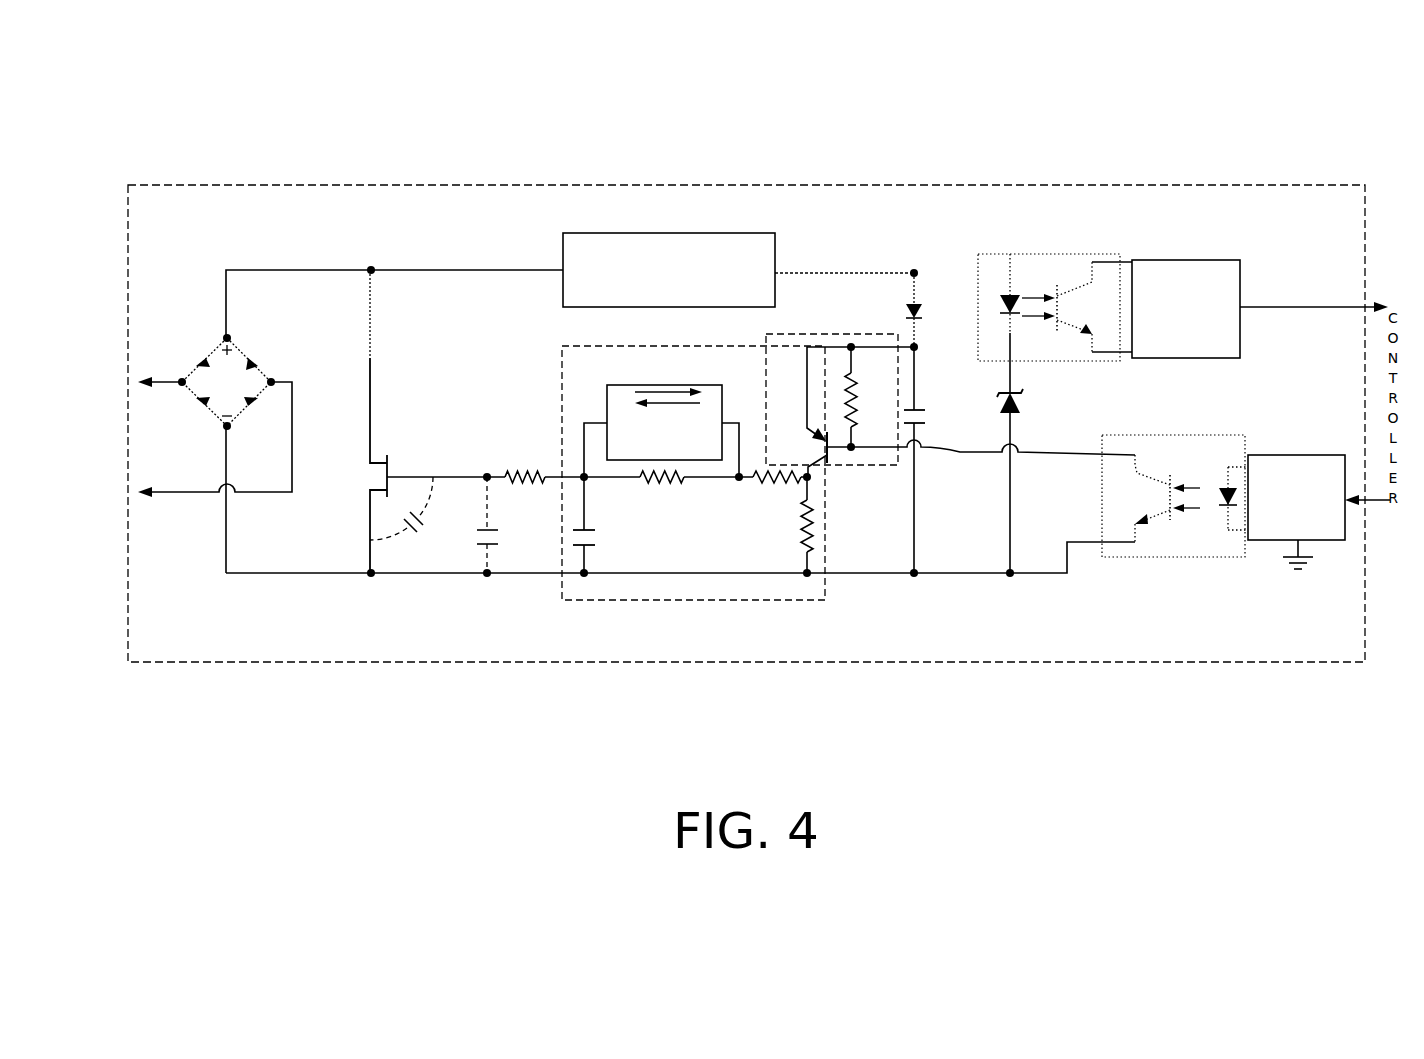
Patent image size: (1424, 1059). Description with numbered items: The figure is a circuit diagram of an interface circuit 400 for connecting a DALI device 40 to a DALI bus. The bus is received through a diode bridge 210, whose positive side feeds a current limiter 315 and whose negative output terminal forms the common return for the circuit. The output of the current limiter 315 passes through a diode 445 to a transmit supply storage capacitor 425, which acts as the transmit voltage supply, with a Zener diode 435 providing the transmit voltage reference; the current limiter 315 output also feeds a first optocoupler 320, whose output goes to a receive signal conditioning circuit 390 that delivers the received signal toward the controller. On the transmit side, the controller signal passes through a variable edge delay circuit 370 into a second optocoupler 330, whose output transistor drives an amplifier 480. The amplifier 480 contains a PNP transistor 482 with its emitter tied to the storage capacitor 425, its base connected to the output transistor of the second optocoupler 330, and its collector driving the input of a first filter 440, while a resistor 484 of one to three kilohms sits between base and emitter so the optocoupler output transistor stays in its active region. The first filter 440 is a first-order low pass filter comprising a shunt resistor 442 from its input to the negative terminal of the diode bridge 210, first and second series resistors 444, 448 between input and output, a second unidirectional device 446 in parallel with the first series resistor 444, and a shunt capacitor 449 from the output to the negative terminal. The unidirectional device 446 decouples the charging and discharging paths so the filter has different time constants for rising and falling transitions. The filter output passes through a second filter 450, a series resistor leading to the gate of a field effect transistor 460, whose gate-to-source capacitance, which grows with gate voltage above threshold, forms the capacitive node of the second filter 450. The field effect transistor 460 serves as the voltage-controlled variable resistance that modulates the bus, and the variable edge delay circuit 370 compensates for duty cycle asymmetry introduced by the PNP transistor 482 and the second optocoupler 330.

The DALI device 40 is at (1348, 51).
The interface circuit 400 is at (746, 406).
The diode bridge 210 is at (211, 405).
The current limiter 315 is at (669, 256).
The first optocoupler 320 is at (1049, 288).
The second optocoupler 330 is at (1175, 515).
The variable edge delay circuit 370 is at (1296, 498).
The receive signal conditioning circuit 390 is at (1260, 291).
The transmit supply storage capacitor 425 is at (938, 462).
The Zener diode 435 is at (1033, 455).
The first filter 440 is at (693, 493).
The shunt resistor 442 is at (785, 525).
The first series resistor 444 is at (662, 493).
The diode 445 is at (895, 308).
The second unidirectional device 446 is at (661, 419).
The second series resistor 448 is at (777, 493).
The shunt capacitor 449 is at (609, 527).
The second filter 450 is at (525, 457).
The field effect transistor 460 is at (432, 421).
The amplifier 480 is at (832, 387).
The PNP transistor 482 is at (844, 410).
The resistor 484 is at (870, 397).